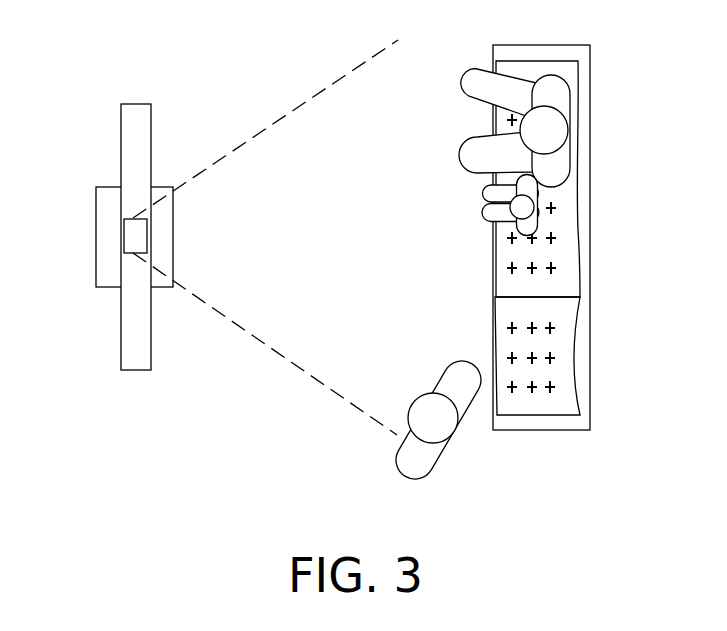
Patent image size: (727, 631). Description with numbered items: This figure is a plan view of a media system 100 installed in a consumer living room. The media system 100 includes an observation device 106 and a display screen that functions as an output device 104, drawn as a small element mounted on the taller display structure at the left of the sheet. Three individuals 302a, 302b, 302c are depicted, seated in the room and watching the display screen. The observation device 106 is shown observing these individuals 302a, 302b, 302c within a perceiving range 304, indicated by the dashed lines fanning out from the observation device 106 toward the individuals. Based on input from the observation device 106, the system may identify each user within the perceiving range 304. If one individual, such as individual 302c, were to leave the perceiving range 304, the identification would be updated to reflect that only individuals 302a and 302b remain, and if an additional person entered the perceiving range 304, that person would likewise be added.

The media system 100 is at (101, 206).
The output device 104 is at (135, 340).
The observation device 106 is at (132, 238).
The perceiving range 304 is at (298, 110).
The individual 302a is at (558, 130).
The individual 302b is at (528, 207).
The individual 302c is at (438, 432).